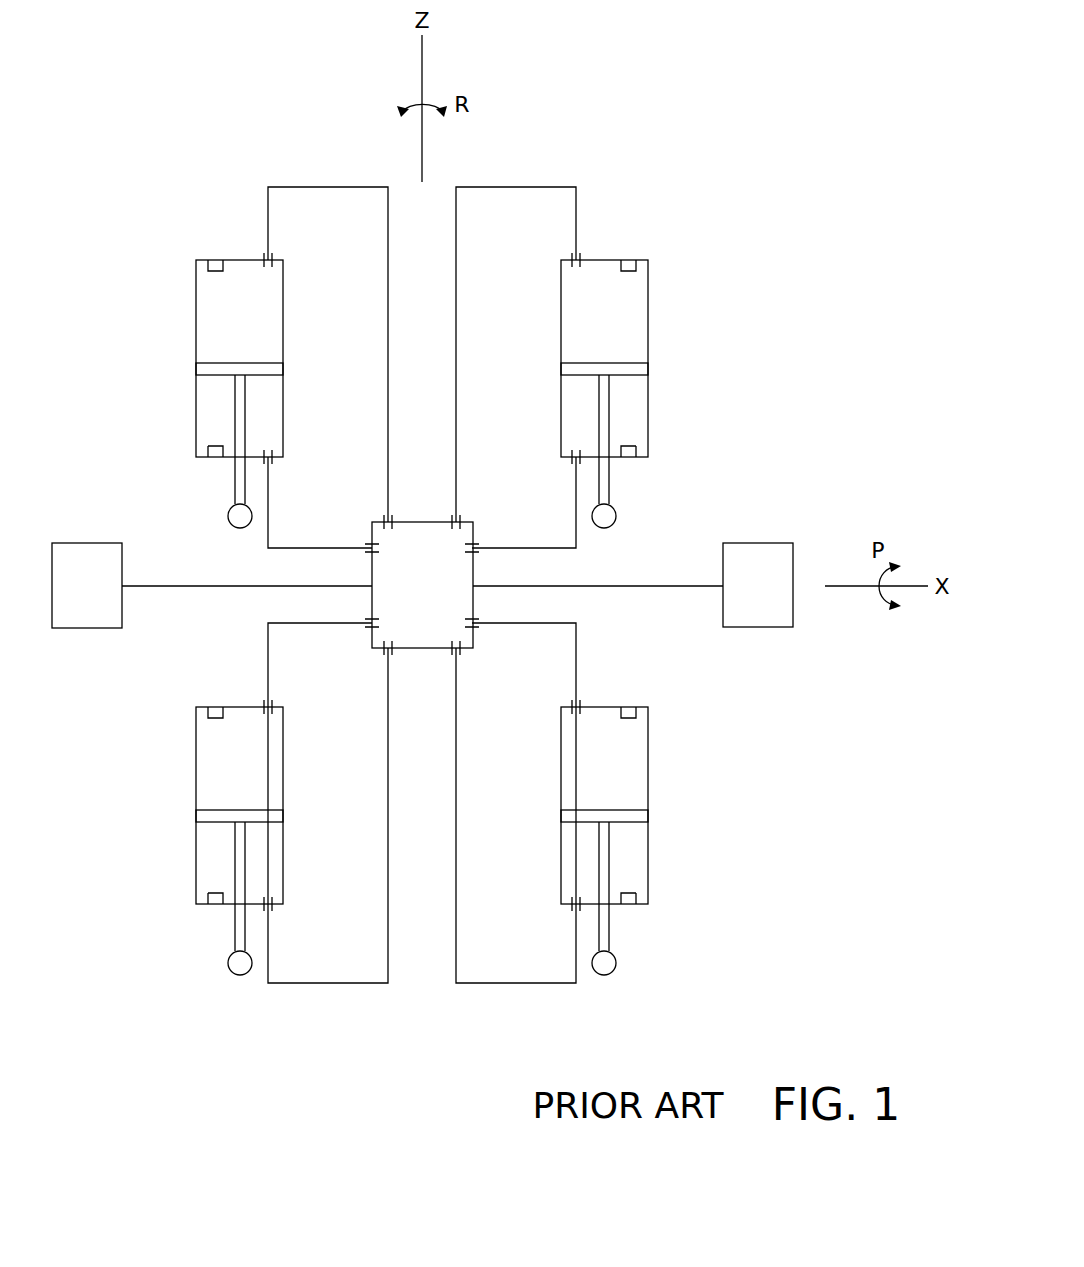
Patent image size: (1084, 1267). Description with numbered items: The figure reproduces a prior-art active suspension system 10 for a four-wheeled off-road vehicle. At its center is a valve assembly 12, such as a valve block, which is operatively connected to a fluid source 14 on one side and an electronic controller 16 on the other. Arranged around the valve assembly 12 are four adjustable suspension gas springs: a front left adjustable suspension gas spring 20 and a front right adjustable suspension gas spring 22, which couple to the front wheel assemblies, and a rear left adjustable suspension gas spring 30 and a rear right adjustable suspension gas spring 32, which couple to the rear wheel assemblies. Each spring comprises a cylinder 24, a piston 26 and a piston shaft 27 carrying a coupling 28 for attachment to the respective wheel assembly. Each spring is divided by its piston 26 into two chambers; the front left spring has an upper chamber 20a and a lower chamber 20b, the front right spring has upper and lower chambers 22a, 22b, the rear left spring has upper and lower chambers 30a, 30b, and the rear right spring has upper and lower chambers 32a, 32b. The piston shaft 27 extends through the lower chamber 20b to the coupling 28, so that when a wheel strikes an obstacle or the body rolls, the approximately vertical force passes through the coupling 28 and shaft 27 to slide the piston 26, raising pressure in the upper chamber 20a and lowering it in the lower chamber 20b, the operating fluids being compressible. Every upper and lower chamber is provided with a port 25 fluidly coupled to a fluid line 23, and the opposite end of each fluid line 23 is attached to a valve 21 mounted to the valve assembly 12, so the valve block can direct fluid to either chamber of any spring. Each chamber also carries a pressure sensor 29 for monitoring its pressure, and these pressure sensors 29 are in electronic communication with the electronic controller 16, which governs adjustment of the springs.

The active suspension system 10 is at (706, 161).
The valve assembly 12 is at (410, 598).
The fluid source 14 is at (744, 599).
The electronic controller 16 is at (72, 599).
The adjustable suspension gas spring 20 is at (162, 328).
The upper chamber 20a is at (215, 307).
The lower chamber 20b is at (262, 409).
The valve 21 is at (466, 548).
The adjustable suspension gas spring 22 is at (682, 328).
The upper chamber 22a is at (660, 311).
The lower chamber 22b is at (571, 416).
The fluid line 23 is at (305, 187).
The cylinder 24 is at (196, 376).
The port 25 is at (270, 268).
The piston 26 is at (262, 370).
The piston shaft 27 is at (235, 490).
The coupling 28 is at (228, 518).
The pressure sensor 29 is at (212, 265).
The adjustable suspension gas spring 30 is at (162, 775).
The upper chamber 30a is at (184, 758).
The lower chamber 30b is at (272, 863).
The adjustable suspension gas spring 32 is at (682, 775).
The upper chamber 32a is at (660, 758).
The lower chamber 32b is at (571, 863).